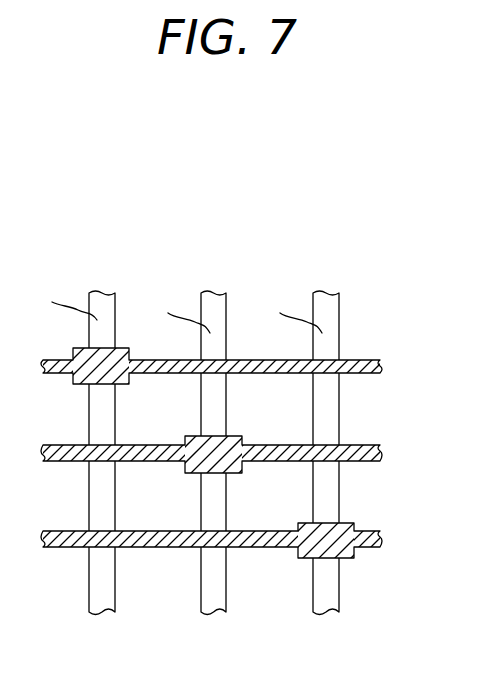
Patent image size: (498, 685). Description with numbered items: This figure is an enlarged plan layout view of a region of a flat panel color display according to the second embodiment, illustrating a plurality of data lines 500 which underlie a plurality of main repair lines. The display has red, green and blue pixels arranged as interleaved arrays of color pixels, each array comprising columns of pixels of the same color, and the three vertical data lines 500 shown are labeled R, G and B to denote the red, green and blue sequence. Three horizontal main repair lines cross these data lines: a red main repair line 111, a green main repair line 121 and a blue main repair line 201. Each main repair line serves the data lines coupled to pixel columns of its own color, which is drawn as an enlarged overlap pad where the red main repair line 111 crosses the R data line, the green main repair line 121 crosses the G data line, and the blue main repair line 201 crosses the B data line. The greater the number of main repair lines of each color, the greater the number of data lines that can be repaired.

The color filter pixel electrodes (R, G, B) 500 is at (329, 300).
The red main repair line 111 is at (381, 368).
The green main repair line 121 is at (381, 455).
The blue main repair line 201 is at (381, 541).